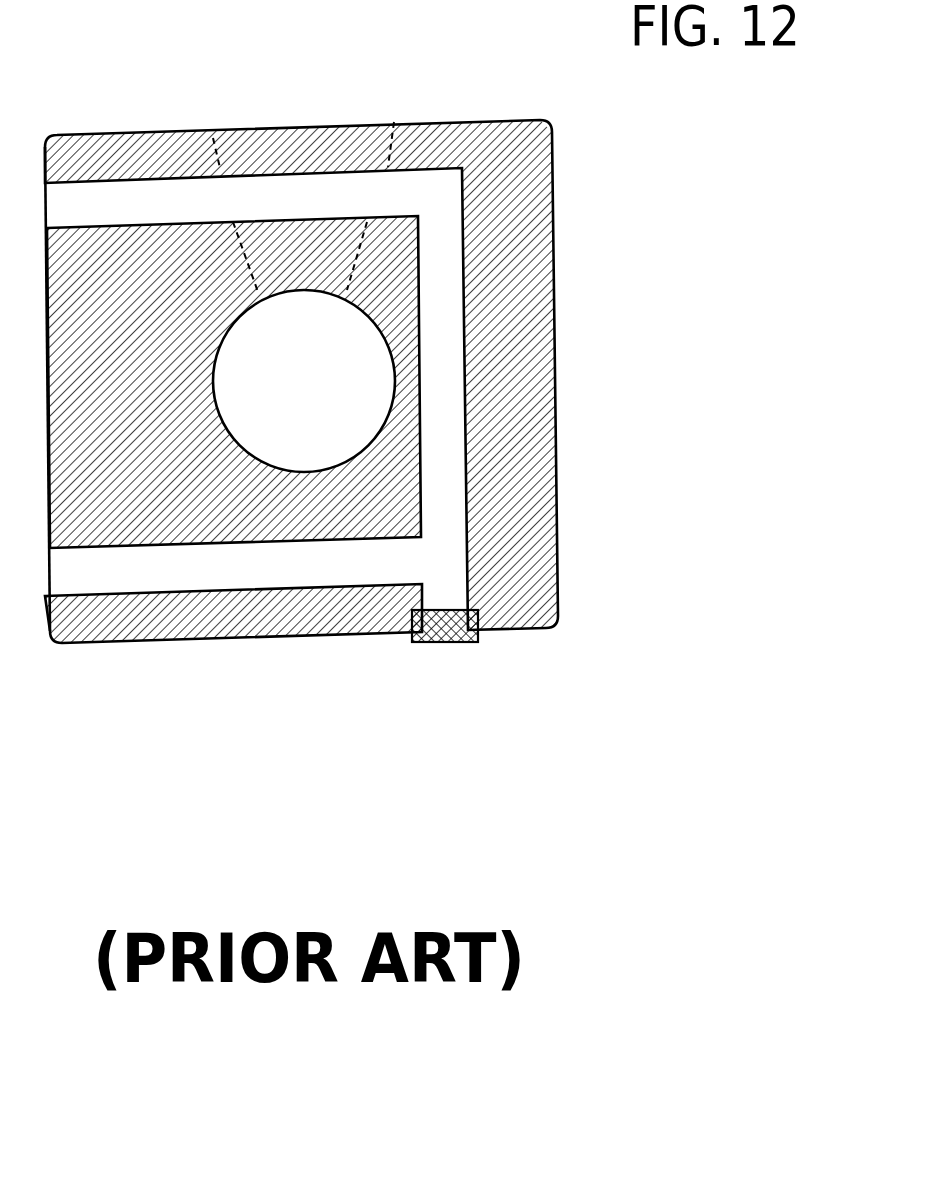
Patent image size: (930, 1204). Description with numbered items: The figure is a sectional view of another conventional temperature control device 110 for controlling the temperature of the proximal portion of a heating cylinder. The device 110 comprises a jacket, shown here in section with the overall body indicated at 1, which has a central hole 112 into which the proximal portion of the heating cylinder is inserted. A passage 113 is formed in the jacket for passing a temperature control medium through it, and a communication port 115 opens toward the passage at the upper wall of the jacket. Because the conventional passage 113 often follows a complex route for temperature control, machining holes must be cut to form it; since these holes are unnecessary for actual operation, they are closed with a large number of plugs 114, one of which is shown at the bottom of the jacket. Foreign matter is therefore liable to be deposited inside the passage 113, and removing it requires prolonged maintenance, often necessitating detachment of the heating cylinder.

The housing body 1 is at (508, 166).
The temperature control device 110 is at (266, 722).
The hole 112 is at (335, 383).
The passage 113 is at (445, 473).
The plug 114 is at (430, 643).
The communication port 115 is at (294, 126).